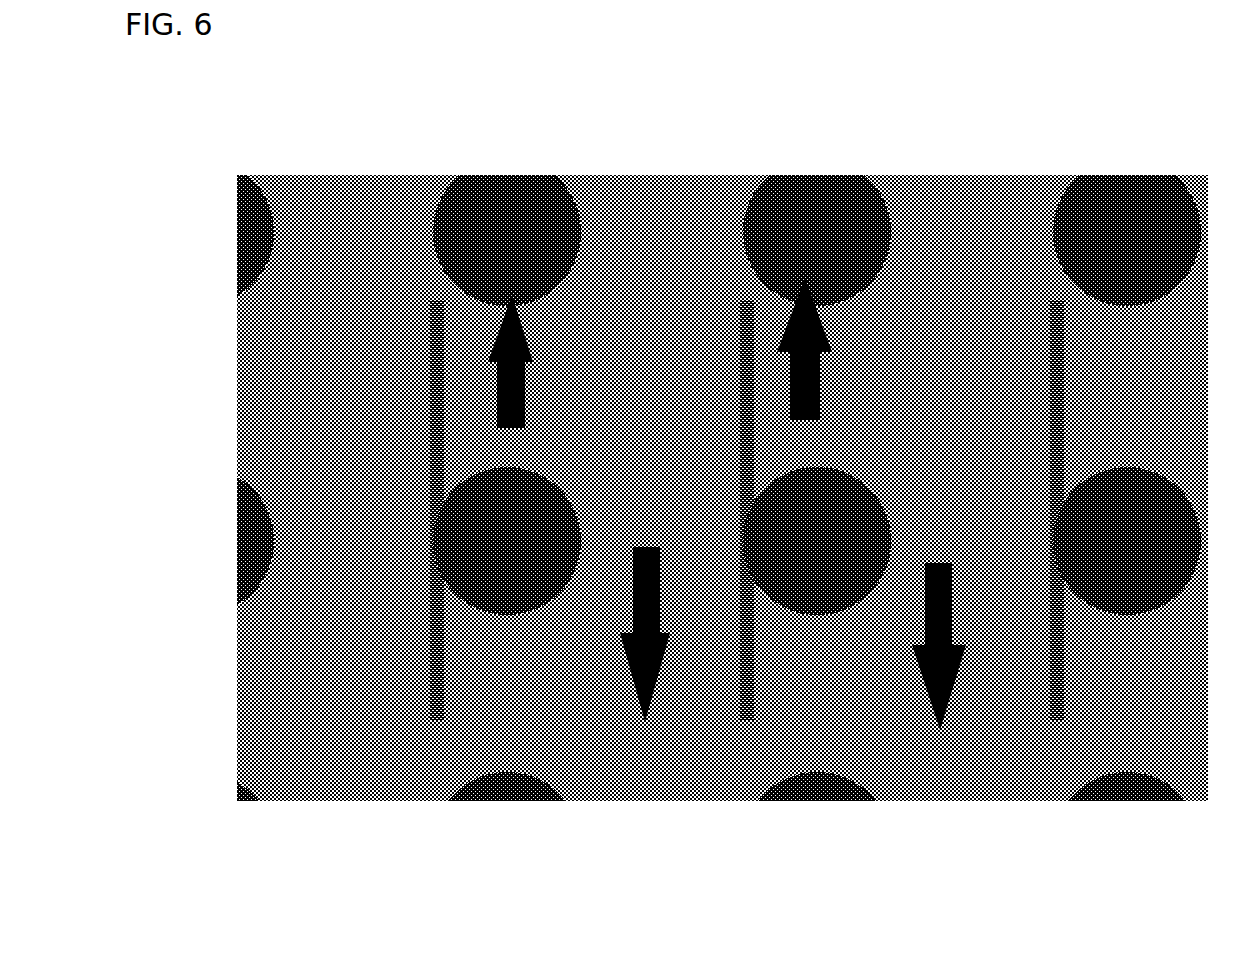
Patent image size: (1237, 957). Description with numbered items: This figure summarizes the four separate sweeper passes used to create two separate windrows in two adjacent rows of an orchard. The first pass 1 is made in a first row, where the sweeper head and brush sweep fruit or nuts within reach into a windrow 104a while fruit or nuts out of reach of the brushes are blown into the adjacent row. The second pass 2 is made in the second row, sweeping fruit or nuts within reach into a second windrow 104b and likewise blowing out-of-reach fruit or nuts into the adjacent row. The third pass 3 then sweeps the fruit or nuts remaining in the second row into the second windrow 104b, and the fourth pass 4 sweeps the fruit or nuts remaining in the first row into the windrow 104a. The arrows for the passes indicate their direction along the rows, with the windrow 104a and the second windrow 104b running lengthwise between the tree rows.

The windrow 104a is at (582, 360).
The second windrow 104b is at (863, 303).
The first pass 1 is at (645, 604).
The second pass 2 is at (822, 359).
The third pass 3 is at (953, 646).
The fourth pass 4 is at (527, 361).